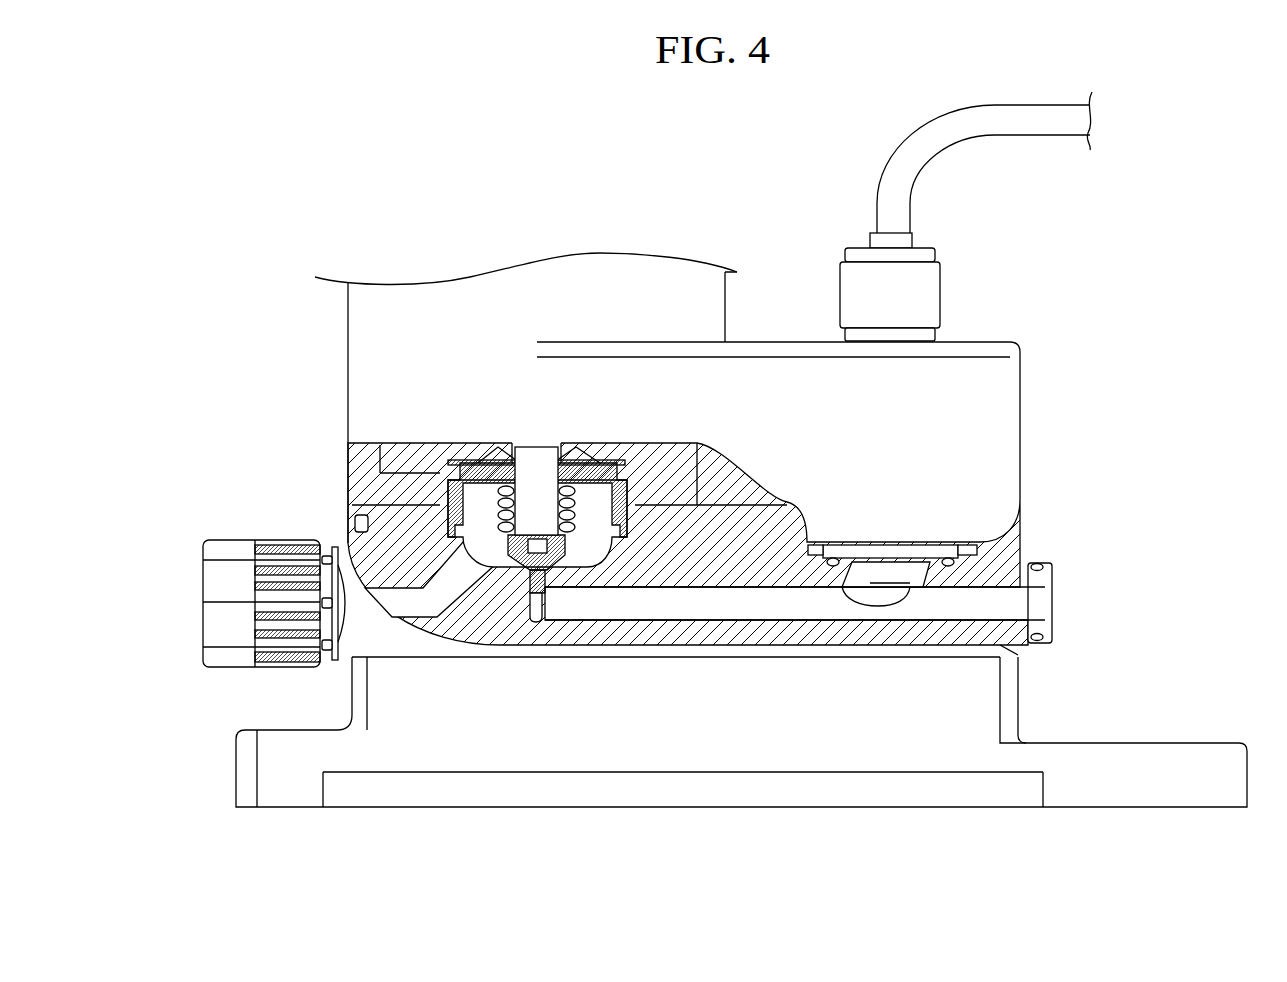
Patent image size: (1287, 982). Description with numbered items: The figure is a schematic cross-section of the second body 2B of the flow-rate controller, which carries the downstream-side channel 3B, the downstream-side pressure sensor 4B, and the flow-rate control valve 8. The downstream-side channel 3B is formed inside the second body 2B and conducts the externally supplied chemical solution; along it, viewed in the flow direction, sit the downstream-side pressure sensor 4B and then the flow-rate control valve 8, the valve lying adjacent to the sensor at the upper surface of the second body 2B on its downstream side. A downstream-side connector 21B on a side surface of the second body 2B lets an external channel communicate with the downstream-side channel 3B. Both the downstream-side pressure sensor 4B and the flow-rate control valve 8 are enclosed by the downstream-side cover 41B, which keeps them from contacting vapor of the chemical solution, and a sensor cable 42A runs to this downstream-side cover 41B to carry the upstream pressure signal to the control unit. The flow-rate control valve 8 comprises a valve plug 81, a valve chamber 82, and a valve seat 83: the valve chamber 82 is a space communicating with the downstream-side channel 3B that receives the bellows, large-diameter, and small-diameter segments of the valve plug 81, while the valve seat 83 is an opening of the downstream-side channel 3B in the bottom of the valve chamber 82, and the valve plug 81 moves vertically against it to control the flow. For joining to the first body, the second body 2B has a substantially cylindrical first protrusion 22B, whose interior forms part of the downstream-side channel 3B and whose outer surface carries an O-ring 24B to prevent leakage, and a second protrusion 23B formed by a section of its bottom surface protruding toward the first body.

The second body 2B is at (254, 116).
The flow-rate control valve 8 is at (445, 254).
The downstream-side cover 41B is at (350, 378).
The downstream-side pressure sensor 4B is at (1029, 337).
The sensor cable 42A is at (1045, 105).
The downstream-side connector 21B is at (200, 585).
The O-ring 24B is at (1037, 565).
The first protrusion 22B is at (1050, 633).
The second protrusion 23B is at (1222, 743).
The downstream-side channel 3B is at (700, 607).
The valve seat 83 is at (511, 557).
The valve chamber 82 is at (585, 553).
The valve plug 81 is at (536, 560).